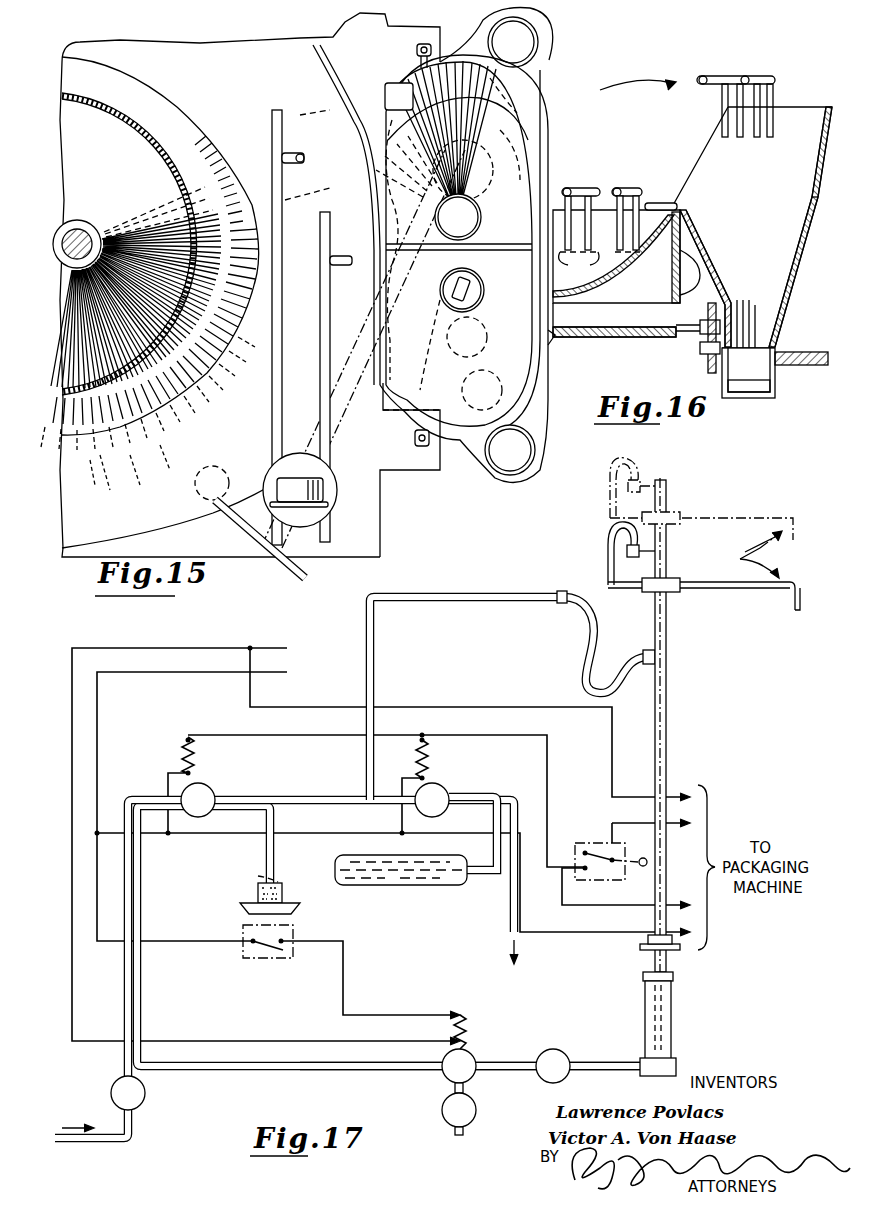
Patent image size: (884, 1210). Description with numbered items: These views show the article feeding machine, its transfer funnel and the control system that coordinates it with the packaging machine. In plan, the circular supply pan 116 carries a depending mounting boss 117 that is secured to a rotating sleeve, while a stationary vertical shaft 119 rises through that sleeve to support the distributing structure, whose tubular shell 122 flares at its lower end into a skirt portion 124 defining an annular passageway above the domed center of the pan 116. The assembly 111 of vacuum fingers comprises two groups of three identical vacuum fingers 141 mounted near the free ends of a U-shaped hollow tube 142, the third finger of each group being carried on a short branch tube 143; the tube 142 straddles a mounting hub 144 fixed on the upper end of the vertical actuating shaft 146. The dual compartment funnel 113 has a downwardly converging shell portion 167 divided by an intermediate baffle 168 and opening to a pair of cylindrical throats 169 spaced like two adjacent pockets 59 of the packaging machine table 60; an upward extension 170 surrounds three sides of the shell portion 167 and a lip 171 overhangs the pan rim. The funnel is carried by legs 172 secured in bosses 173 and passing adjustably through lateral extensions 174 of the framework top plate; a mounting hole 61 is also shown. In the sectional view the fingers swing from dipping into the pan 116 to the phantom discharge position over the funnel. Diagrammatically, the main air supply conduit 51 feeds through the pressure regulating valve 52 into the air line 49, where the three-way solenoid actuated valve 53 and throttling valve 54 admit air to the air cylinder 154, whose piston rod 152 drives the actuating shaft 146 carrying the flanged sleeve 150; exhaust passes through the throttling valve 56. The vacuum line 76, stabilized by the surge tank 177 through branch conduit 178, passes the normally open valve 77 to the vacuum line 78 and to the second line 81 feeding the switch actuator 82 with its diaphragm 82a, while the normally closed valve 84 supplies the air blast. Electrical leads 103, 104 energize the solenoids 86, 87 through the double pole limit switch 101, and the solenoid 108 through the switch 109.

In FIG. 15, the circular supply pan 116 is at (190, 44).
In FIG. 16, the circular supply pan 116 is at (702, 305).
In FIG. 15, the assembly of vacuum fingers 111 is at (272, 104).
In FIG. 16, the assembly of vacuum fingers 111 is at (603, 187).
In FIG. 17, the assembly of vacuum fingers 111 is at (749, 554).
In FIG. 15, the stationary vertical shaft 119 is at (94, 234).
In FIG. 15, the mounting boss 117 is at (116, 342).
In FIG. 15, the vacuum finger 141 is at (282, 148).
In FIG. 16, the vacuum finger 141 is at (572, 258).
In FIG. 17, the vacuum finger 141 is at (800, 612).
In FIG. 15, the branch tube 143 is at (304, 160).
In FIG. 15, the U-shaped hollow tube 142 is at (263, 408).
In FIG. 16, the U-shaped hollow tube 142 is at (628, 190).
In FIG. 17, the U-shaped hollow tube 142 is at (752, 595).
In FIG. 15, the tubular shell 122 is at (133, 270).
In FIG. 15, the skirt portion 124 is at (148, 413).
In FIG. 15, the lateral extension 174 is at (441, 58).
In FIG. 16, the lateral extension 174 is at (704, 345).
In FIG. 15, the leg 172 is at (416, 50).
In FIG. 16, the leg 172 is at (690, 330).
In FIG. 15, the boss 173 is at (412, 72).
In FIG. 15, the mounting hole 61 is at (548, 38).
In FIG. 15, the dual compartment funnel 113 is at (537, 100).
In FIG. 16, the dual compartment funnel 113 is at (798, 100).
In FIG. 15, the packaging machine table 60 is at (549, 126).
In FIG. 16, the packaging machine table 60 is at (809, 352).
In FIG. 15, the intermediate baffle 168 is at (452, 225).
In FIG. 16, the intermediate baffle 168 is at (710, 148).
In FIG. 15, the cylindrical throat 169 is at (471, 212).
In FIG. 16, the cylindrical throat 169 is at (762, 325).
In FIG. 15, the converging shell portion 167 is at (541, 342).
In FIG. 16, the converging shell portion 167 is at (775, 268).
In FIG. 15, the mounting hub 144 is at (392, 505).
In FIG. 17, the mounting hub 144 is at (675, 592).
In FIG. 15, the pocket 59 is at (521, 473).
In FIG. 16, the pocket 59 is at (778, 376).
In FIG. 16, the upward extension 170 is at (818, 188).
In FIG. 16, the lip 171 is at (690, 202).
In FIG. 17, the electrical lead 103 is at (262, 647).
In FIG. 17, the electrical lead 104 is at (270, 680).
In FIG. 17, the vacuum line 78 is at (374, 680).
In FIG. 17, the solenoid 87 is at (182, 752).
In FIG. 17, the solenoid 86 is at (430, 758).
In FIG. 17, the solenoid actuated valve 84 is at (212, 794).
In FIG. 17, the solenoid actuated valve 77 is at (448, 794).
In FIG. 17, the vacuum line 76 is at (332, 798).
In FIG. 17, the second line 81 is at (274, 858).
In FIG. 17, the pressure-responsive switch actuator 82 is at (246, 904).
In FIG. 17, the valve stem 82a is at (258, 884).
In FIG. 17, the double pole limit switch 101 is at (592, 843).
In FIG. 17, the switch 109 is at (266, 960).
In FIG. 17, the surge tank 177 is at (356, 885).
In FIG. 17, the branch conduit 178 is at (490, 878).
In FIG. 17, the solenoid 108 is at (468, 1030).
In FIG. 17, the three-way solenoid actuated valve 53 is at (474, 1058).
In FIG. 17, the throttling valve 54 is at (568, 1056).
In FIG. 17, the throttling valve 56 is at (441, 1104).
In FIG. 17, the pressure regulating valve 52 is at (146, 1100).
In FIG. 17, the air line 49 is at (302, 1072).
In FIG. 17, the main air supply conduit 51 is at (134, 1126).
In FIG. 17, the actuating shaft 146 is at (667, 742).
In FIG. 17, the flanged sleeve 150 is at (682, 948).
In FIG. 17, the piston rod 152 is at (650, 962).
In FIG. 17, the air cylinder 154 is at (673, 1026).